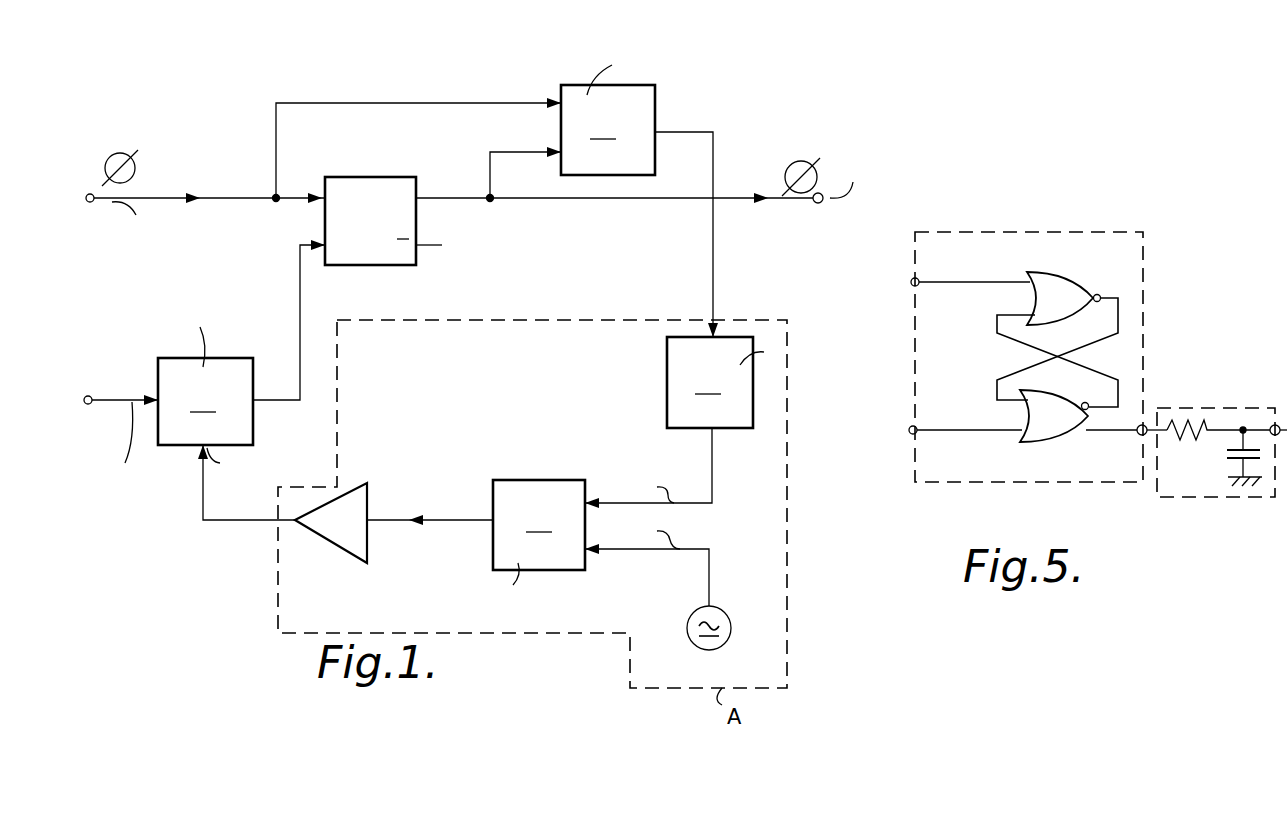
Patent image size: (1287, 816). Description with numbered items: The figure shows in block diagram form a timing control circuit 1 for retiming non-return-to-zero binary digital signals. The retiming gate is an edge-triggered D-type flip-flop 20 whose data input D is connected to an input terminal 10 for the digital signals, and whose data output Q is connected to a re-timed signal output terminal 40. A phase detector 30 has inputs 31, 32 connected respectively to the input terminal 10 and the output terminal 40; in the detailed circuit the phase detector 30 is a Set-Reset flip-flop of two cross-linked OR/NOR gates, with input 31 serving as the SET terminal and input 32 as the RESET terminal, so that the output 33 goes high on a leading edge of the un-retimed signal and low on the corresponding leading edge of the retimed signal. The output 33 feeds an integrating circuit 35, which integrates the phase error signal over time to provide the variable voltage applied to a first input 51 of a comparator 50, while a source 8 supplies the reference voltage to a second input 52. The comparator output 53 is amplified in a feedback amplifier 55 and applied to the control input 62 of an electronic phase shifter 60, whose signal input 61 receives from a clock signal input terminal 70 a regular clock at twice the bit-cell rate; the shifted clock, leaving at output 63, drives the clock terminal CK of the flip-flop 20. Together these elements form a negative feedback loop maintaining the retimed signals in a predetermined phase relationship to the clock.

In FIG. 1, the timing control circuit 1 is at (757, 147).
In FIG. 1, the reference voltage source 8 is at (731, 632).
In FIG. 1, the input terminal 10 is at (92, 205).
In FIG. 1, the edge-triggered D-type flip-flop 20 is at (380, 255).
In FIG. 1, the phase detector 30 is at (623, 98).
In FIG. 5, the phase detector 30 is at (1060, 232).
In FIG. 1, the phase detector input 31 is at (558, 100).
In FIG. 5, the phase detector input 31 is at (917, 426).
In FIG. 1, the phase detector input 32 is at (558, 148).
In FIG. 5, the phase detector input 32 is at (919, 279).
In FIG. 1, the phase detector output 33 is at (656, 130).
In FIG. 5, the phase detector output 33 is at (1145, 420).
In FIG. 1, the integrating circuit 35 is at (782, 382).
In FIG. 5, the integrating circuit 35 is at (1165, 497).
In FIG. 1, the re-timed signal output terminal 40 is at (814, 207).
In FIG. 1, the comparator 50 is at (528, 545).
In FIG. 1, the first input of comparator 51 is at (585, 485).
In FIG. 1, the second input of comparator 52 is at (588, 552).
In FIG. 1, the comparator output 53 is at (493, 520).
In FIG. 1, the feedback amplifier 55 is at (323, 522).
In FIG. 1, the electronic phase shifter 60 is at (205, 364).
In FIG. 1, the signal input of phase shifter 61 is at (157, 397).
In FIG. 1, the control input of phase shifter 62 is at (193, 447).
In FIG. 1, the phase shifter output 63 is at (253, 405).
In FIG. 1, the clock signal input terminal 70 is at (88, 404).